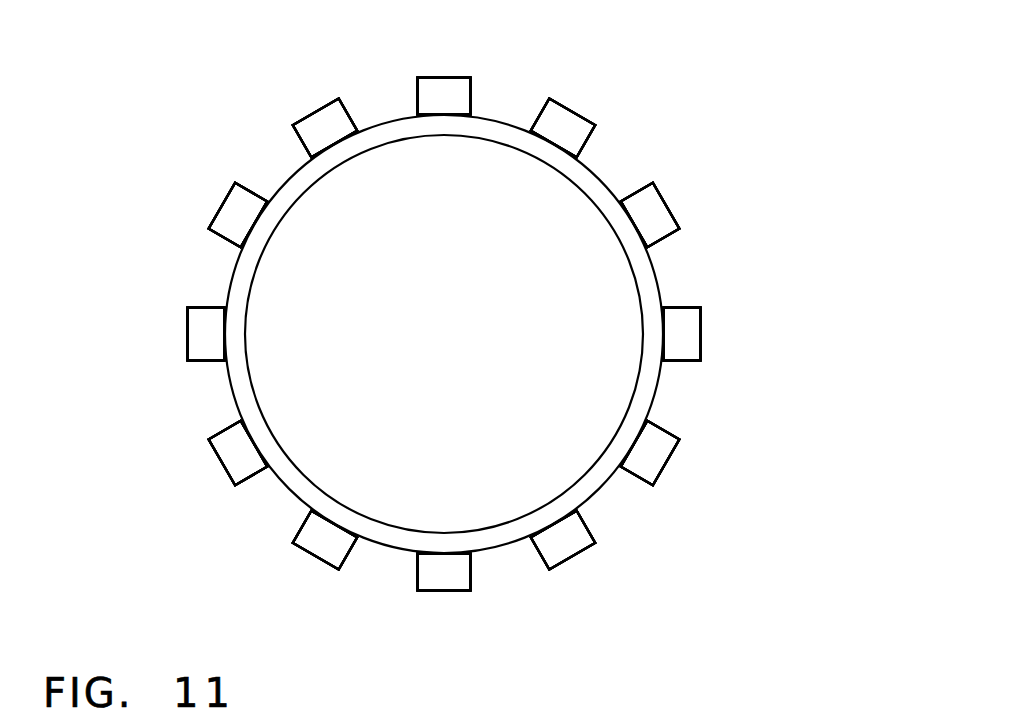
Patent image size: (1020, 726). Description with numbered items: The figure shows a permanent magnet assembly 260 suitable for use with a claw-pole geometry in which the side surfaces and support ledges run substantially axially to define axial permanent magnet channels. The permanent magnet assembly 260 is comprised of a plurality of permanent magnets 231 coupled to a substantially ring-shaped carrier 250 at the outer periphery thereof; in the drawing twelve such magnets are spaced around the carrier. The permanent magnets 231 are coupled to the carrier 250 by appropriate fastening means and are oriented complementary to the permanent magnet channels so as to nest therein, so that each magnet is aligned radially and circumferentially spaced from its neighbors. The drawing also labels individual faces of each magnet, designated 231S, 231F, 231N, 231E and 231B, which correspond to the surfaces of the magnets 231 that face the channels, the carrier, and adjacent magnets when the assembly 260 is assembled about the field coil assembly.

The permanent magnet assembly 260 is at (772, 136).
The ring-shaped carrier 250 is at (652, 392).
The permanent magnet 231 is at (538, 126).
The segment block side face 231S is at (543, 108).
The segment block front face 231F is at (448, 78).
The segment block side face 231N is at (418, 105).
The segment block end face 231E is at (432, 107).
The segment block back face 231B is at (535, 150).